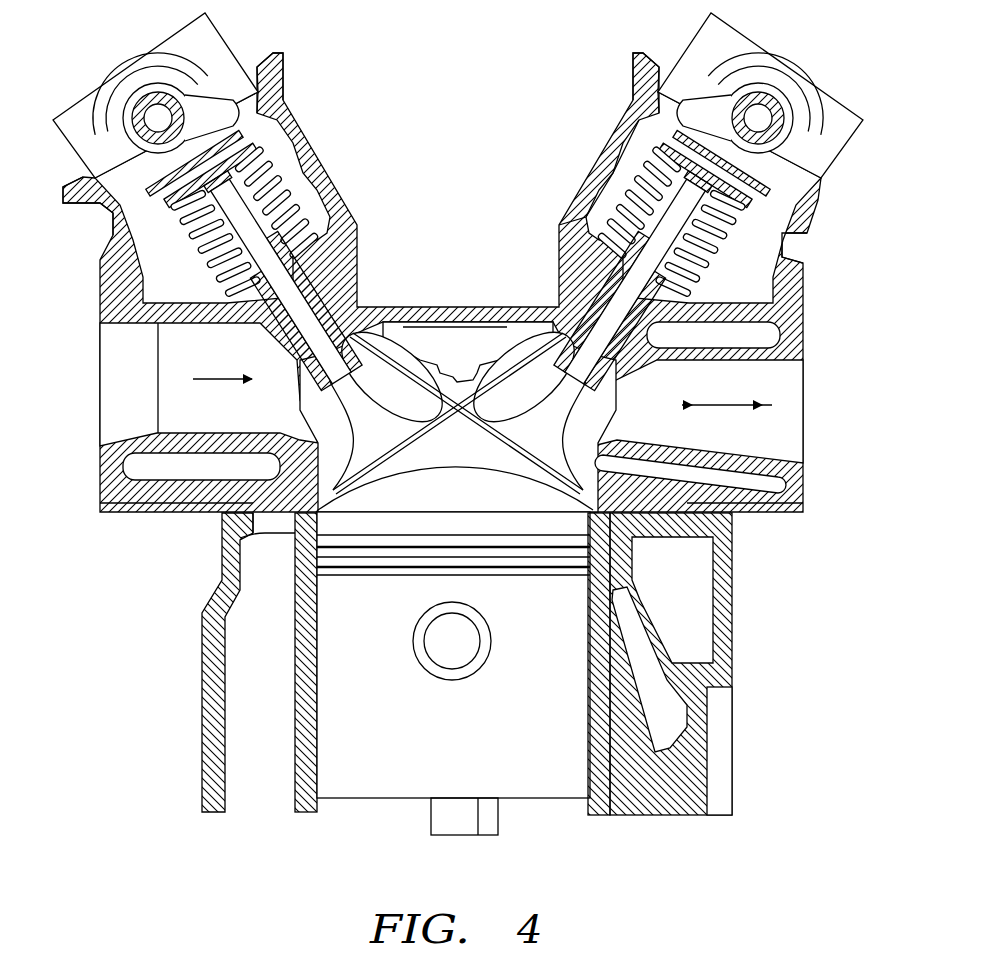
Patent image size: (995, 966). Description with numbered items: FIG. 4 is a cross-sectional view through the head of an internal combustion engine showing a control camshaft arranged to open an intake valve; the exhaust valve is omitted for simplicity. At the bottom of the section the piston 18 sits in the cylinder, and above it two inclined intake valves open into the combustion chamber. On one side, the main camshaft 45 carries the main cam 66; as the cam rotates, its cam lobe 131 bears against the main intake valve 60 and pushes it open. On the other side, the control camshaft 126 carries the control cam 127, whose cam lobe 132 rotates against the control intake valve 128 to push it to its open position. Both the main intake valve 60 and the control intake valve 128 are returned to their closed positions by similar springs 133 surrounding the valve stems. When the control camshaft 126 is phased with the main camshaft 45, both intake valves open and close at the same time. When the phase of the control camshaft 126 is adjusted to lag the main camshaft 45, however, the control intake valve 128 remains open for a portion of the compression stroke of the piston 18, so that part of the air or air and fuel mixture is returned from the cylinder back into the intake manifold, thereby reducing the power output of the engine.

The piston 18 is at (527, 787).
The main camshaft 45 is at (147, 117).
The main intake valve 60 is at (350, 250).
The main cam 66 is at (205, 108).
The control camshaft 126 is at (760, 118).
The control cam 127 is at (710, 107).
The control intake valve 128 is at (557, 264).
The cam lobe 131 is at (293, 93).
The cam lobe 132 is at (633, 100).
The springs 133 is at (785, 228).